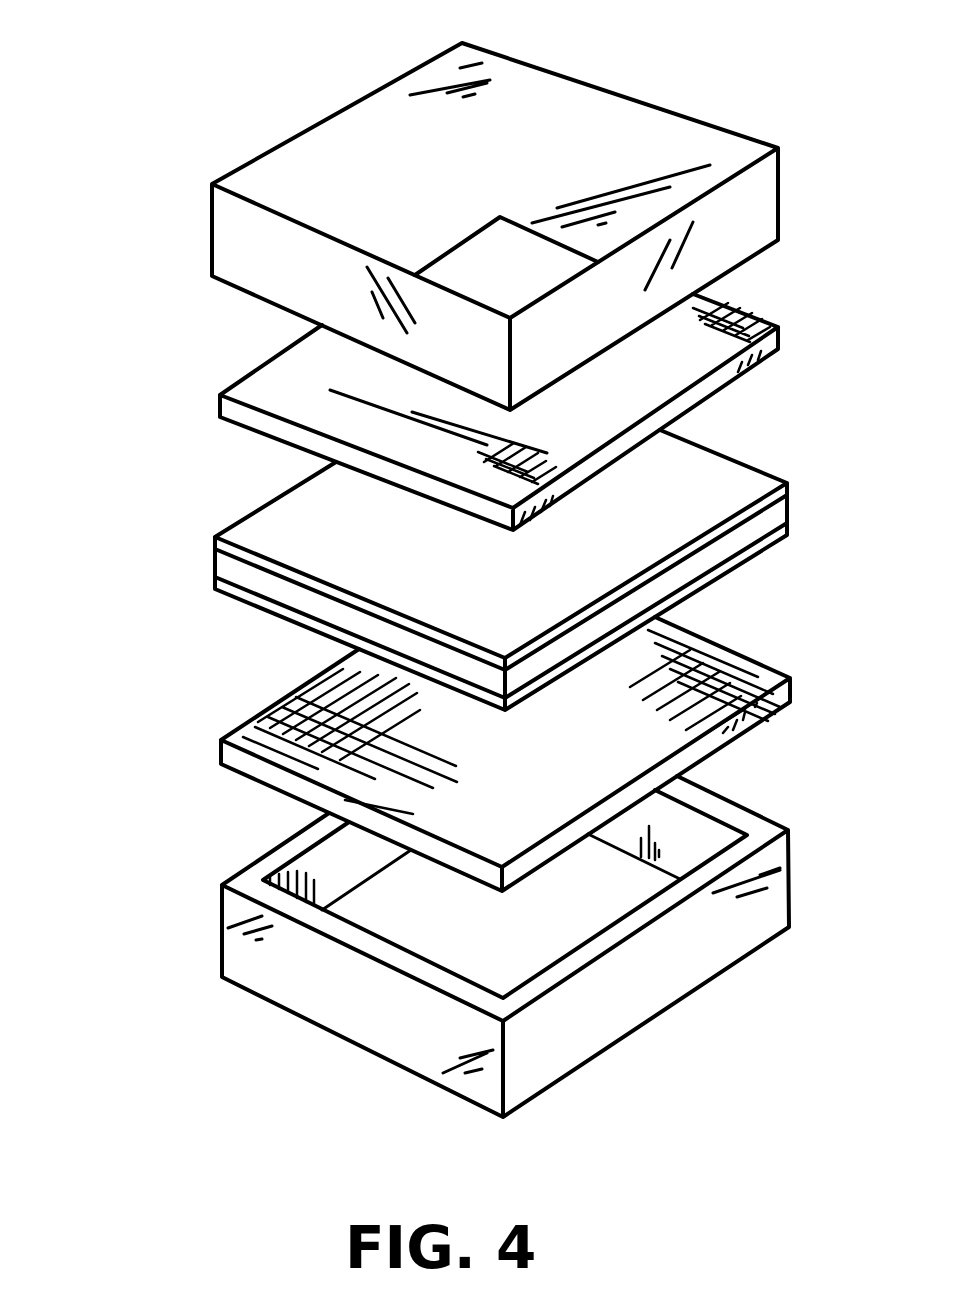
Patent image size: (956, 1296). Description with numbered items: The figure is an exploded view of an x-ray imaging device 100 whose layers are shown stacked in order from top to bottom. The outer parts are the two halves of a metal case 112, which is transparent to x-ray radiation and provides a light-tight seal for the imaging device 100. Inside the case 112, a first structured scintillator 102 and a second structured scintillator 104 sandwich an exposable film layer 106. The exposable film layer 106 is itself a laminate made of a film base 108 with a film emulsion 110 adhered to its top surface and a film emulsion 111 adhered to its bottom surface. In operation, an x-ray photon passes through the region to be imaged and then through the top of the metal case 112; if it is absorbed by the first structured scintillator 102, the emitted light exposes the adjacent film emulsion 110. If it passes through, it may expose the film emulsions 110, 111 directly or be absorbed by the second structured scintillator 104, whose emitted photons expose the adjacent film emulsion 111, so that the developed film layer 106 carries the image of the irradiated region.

The x-ray imaging device 100 is at (182, 116).
The first structured scintillator 102 is at (220, 399).
The second structured scintillator 104 is at (221, 756).
The exposable film layer 106 is at (185, 558).
The film base 108 is at (225, 567).
The film emulsion 110 is at (217, 541).
The film emulsion 111 is at (247, 598).
The metal case 112 is at (213, 252).